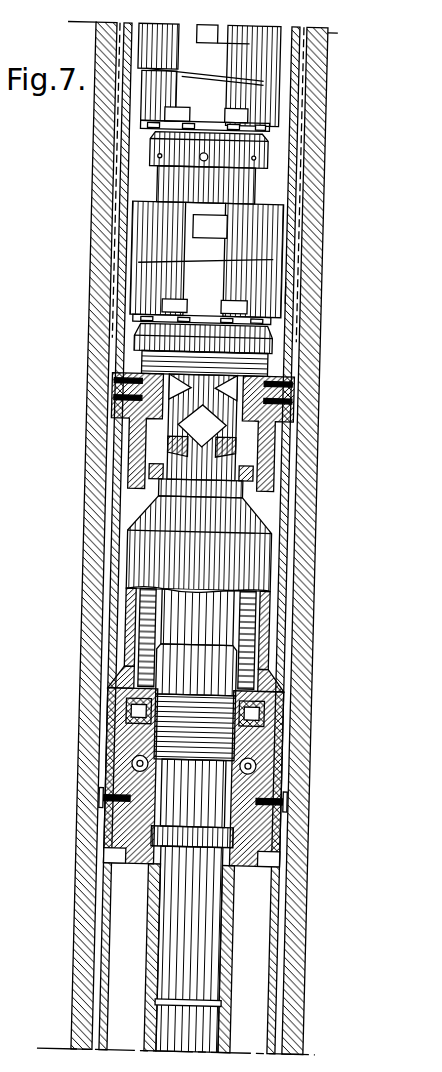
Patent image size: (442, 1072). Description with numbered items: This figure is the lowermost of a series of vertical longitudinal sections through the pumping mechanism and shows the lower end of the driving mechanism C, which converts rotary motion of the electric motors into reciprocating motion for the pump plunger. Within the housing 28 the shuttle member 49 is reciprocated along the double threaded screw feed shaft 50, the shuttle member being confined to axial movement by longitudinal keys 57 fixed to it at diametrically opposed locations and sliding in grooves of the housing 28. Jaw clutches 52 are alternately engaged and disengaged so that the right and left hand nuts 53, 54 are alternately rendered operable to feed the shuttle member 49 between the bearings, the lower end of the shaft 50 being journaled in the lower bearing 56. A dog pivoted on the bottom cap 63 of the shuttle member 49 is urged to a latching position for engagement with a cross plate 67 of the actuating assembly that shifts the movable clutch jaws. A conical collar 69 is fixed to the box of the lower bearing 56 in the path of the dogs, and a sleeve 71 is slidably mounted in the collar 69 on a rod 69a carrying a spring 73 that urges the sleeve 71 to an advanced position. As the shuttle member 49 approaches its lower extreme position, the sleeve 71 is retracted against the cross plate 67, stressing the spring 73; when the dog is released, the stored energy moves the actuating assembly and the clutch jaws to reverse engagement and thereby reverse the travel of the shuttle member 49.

The housing 28 is at (92, 303).
The longitudinal keys 57 is at (120, 143).
The jaw clutch 52 is at (273, 95).
The shuttle member 49 is at (136, 187).
The left hand nut 54 is at (245, 195).
The right hand nut 53 is at (290, 270).
The driving mechanism C is at (300, 295).
The bottom cap 63 is at (285, 420).
The double threaded screw feed shaft 50 is at (222, 438).
The cross plate 67 is at (262, 472).
The sleeve 71 is at (166, 483).
The conical collar 69 is at (266, 522).
The rod 69a is at (140, 596).
The spring 73 is at (154, 634).
The lower bearing 56 is at (300, 690).